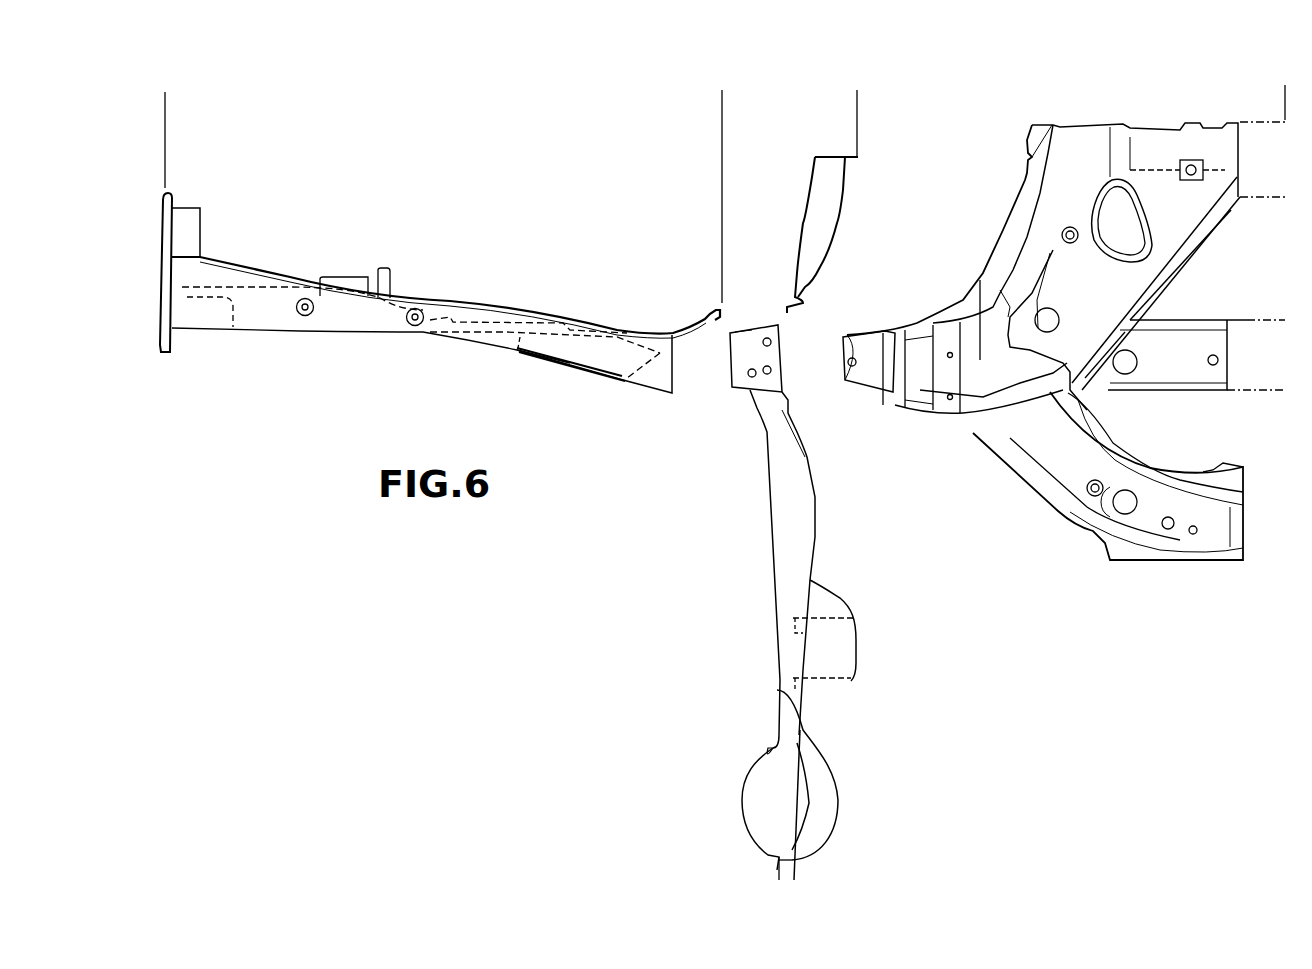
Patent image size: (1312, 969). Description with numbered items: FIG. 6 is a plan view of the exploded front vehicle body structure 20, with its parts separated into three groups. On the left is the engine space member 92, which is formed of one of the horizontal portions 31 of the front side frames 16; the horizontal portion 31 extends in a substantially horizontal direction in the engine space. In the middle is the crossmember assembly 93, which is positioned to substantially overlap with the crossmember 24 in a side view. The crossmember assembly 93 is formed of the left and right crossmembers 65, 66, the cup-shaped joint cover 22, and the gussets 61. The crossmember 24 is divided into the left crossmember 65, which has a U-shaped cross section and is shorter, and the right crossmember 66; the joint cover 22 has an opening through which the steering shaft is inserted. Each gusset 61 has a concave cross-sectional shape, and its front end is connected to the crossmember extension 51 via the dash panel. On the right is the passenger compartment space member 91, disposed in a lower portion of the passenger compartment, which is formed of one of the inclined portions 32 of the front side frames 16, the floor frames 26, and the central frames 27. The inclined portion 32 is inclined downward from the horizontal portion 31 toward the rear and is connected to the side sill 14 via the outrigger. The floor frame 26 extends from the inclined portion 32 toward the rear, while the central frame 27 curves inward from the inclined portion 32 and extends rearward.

The vehicle body front structure 20 is at (178, 65).
The engine space member 92 is at (718, 87).
The crossmember assembly 93 is at (854, 86).
The passenger compartment space member 91 is at (1285, 83).
The front side frame 16 is at (425, 287).
The horizontal portion 31 is at (463, 297).
The gusset 61 is at (833, 157).
The crossmember extension 51 is at (749, 321).
The crossmember 24 is at (617, 745).
The right crossmember 66 is at (777, 690).
The left crossmember 65 is at (777, 870).
The joint cover 22 is at (762, 823).
The side sill 14 is at (1253, 197).
The inclined portion 32 is at (1167, 320).
The floor frame 26 is at (1247, 403).
The central frame 27 is at (1167, 563).